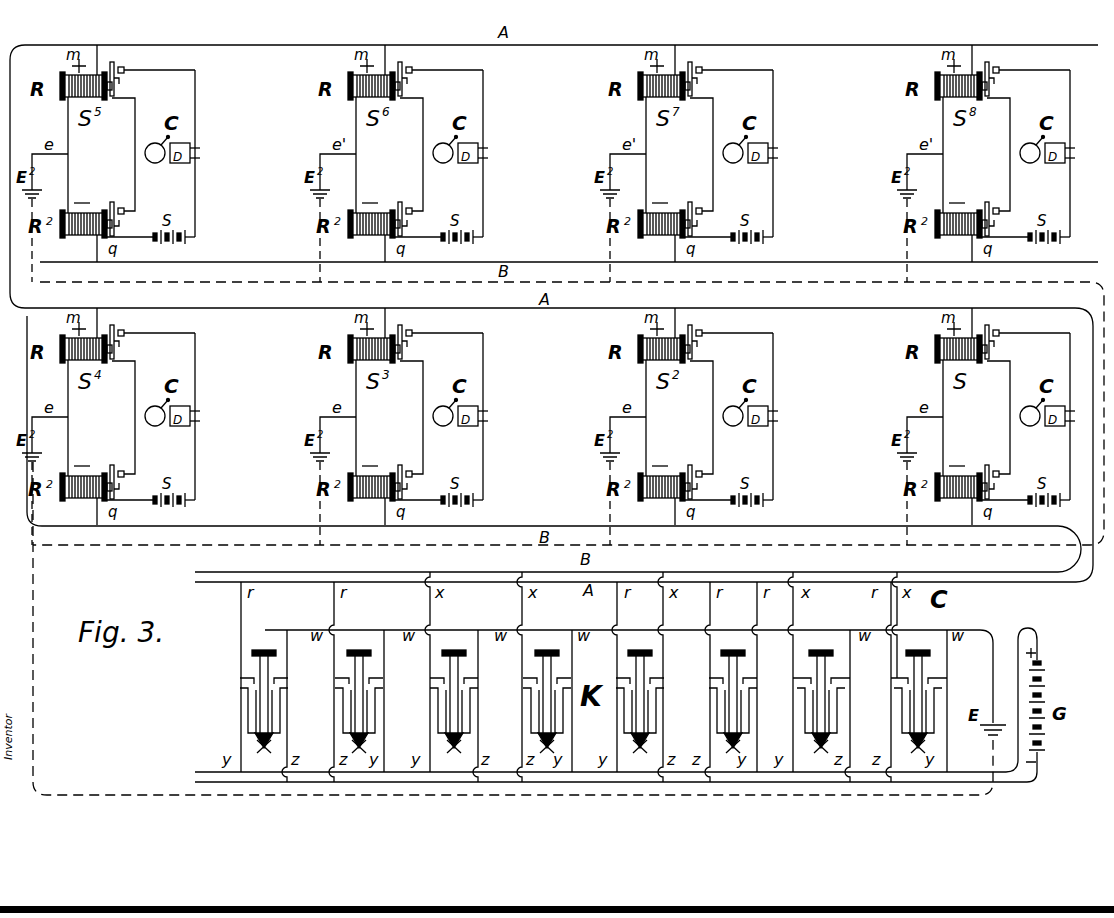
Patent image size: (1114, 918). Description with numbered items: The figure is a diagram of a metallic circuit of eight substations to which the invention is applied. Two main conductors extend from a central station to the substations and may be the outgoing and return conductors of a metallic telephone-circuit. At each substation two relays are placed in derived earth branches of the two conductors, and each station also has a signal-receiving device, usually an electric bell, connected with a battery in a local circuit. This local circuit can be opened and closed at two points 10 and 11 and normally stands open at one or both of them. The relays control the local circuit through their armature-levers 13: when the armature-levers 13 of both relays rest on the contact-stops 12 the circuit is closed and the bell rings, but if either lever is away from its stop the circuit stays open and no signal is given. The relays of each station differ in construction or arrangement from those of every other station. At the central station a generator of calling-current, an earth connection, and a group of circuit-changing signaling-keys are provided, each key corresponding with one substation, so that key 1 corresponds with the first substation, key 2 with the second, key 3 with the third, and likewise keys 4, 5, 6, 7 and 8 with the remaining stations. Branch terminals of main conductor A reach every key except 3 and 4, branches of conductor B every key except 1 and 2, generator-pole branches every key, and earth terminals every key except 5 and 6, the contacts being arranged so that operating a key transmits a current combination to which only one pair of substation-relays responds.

The local circuit opening and closing point 10 is at (562, 218).
The local circuit opening and closing point 11 is at (557, 338).
The contact-stop 12 is at (594, 271).
The armature-lever 13 is at (554, 278).
The signaling-key 1 is at (264, 682).
The signaling-key 2 is at (356, 682).
The signaling-key 3 is at (451, 677).
The signaling-key 4 is at (544, 677).
The signaling-key 5 is at (638, 677).
The signaling-key 6 is at (731, 682).
The signaling-key 7 is at (819, 677).
The signaling-key 8 is at (916, 677).